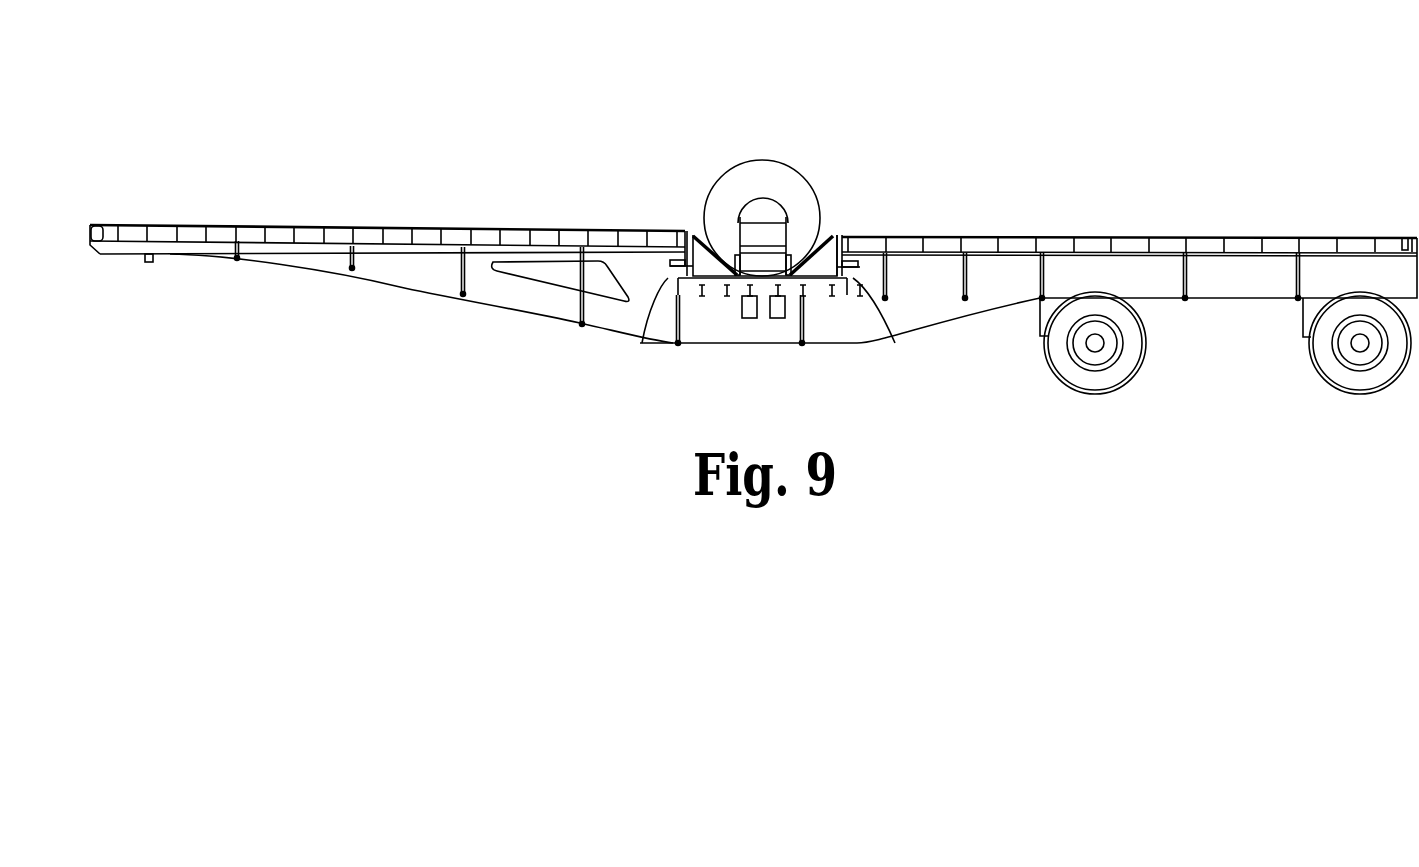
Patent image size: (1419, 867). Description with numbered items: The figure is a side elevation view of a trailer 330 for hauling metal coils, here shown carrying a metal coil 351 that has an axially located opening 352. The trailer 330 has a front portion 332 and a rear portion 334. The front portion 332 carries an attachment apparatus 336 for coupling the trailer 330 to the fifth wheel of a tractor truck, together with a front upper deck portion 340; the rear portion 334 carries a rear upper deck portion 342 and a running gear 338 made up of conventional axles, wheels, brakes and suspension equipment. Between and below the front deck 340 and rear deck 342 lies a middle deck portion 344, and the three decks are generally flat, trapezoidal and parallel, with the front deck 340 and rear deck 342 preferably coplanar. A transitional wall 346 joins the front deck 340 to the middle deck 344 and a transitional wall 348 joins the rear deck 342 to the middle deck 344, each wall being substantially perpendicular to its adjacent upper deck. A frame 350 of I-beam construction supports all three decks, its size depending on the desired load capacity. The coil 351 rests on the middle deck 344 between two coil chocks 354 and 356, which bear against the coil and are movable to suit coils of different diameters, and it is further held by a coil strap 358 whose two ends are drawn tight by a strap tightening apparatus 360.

The trailer 330 is at (905, 72).
The front portion 332 is at (123, 226).
The rear portion 334 is at (1320, 238).
The attachment apparatus 336 is at (150, 263).
The running gear 338 is at (1376, 434).
The upper deck portion 340 is at (565, 229).
The upper deck portion 342 is at (927, 237).
The middle deck portion 344 is at (788, 283).
The transitional wall 346 is at (668, 279).
The transitional wall 348 is at (897, 333).
The frame 350 is at (513, 321).
The metal coil 351 is at (790, 165).
The axially located opening 352 is at (750, 190).
The coil chock 354 is at (697, 243).
The coil chock 356 is at (830, 238).
The coil strap 358 is at (788, 240).
The strap tightening apparatus 360 is at (738, 280).